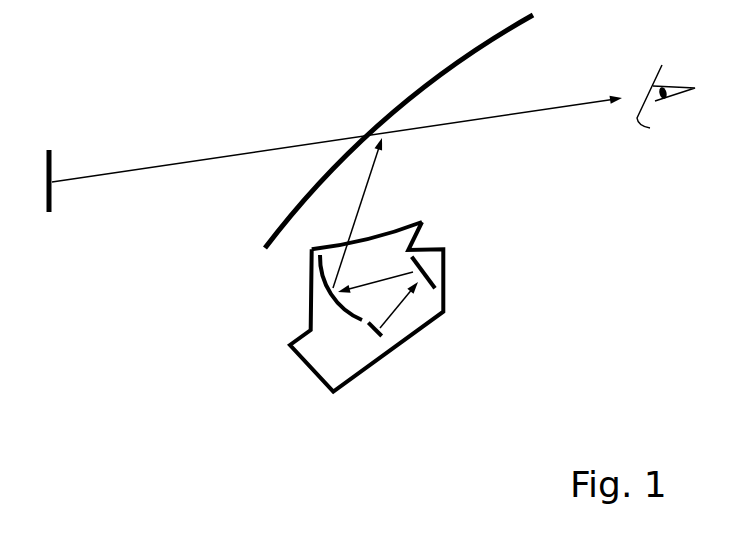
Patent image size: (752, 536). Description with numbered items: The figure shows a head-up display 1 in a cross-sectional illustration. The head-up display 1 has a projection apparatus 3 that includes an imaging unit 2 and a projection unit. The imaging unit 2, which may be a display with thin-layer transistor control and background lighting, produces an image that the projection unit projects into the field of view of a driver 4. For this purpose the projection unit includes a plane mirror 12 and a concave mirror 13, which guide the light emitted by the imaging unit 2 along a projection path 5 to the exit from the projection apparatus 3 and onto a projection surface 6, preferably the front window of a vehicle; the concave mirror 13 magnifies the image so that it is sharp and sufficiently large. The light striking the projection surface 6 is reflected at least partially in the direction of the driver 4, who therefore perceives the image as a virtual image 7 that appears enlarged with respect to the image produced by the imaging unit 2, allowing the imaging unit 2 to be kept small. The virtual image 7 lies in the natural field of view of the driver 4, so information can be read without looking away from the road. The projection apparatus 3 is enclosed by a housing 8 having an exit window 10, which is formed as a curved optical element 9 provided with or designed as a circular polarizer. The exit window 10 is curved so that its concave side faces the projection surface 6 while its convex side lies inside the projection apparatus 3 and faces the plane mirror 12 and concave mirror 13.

The head-up display 1 is at (340, 88).
The imaging unit 2 is at (372, 340).
The projection apparatus 3 is at (470, 370).
The driver 4 is at (667, 91).
The projection path 5 is at (378, 290).
The projection surface 6 is at (528, 22).
The virtual image 7 is at (51, 158).
The housing 8 is at (438, 317).
The curved optical element 9 is at (423, 221).
The exit window 10 is at (380, 208).
The plane mirror 12 is at (427, 271).
The concave mirror 13 is at (330, 293).